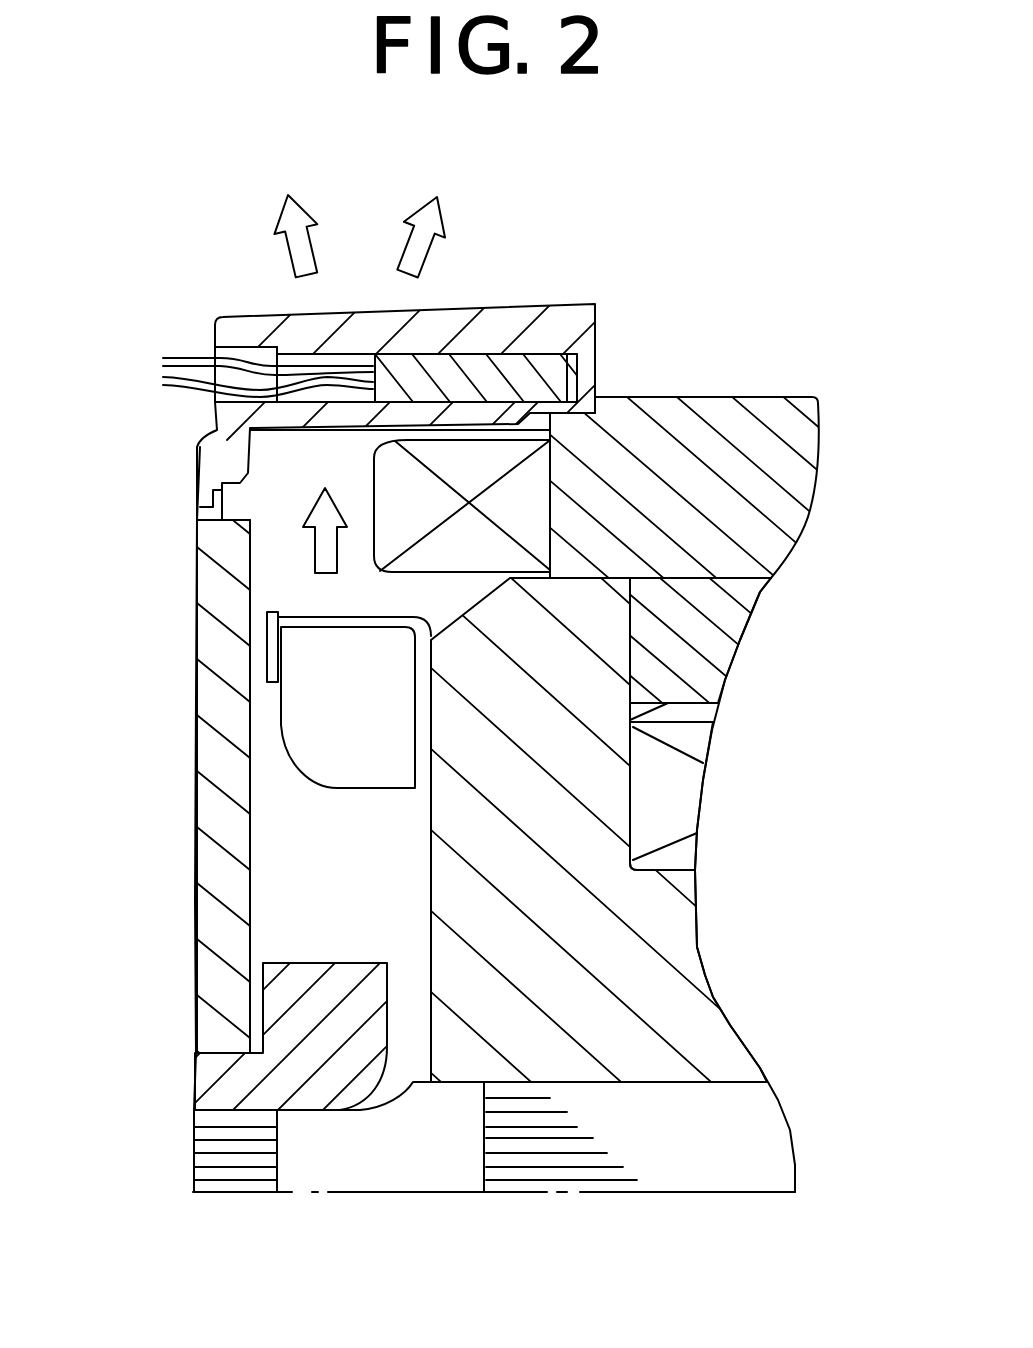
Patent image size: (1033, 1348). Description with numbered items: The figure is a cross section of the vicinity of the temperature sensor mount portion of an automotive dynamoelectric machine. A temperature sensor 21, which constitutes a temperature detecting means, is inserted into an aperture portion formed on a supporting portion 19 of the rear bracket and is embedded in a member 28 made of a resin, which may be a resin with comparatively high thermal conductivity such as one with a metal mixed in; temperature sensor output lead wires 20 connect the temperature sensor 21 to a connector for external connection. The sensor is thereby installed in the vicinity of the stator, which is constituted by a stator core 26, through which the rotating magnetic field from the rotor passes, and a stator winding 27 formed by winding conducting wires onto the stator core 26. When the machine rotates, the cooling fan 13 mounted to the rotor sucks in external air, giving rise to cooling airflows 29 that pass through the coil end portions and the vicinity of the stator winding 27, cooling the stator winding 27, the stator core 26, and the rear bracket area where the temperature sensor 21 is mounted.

The cooling fan 13 is at (317, 670).
The supporting portion 19 is at (214, 352).
The temperature sensor output lead wires 20 is at (185, 358).
The temperature sensor 21 is at (483, 362).
The stator core 26 is at (702, 448).
The stator winding 27 is at (528, 495).
The member 28 is at (330, 350).
The cooling airflows 29 is at (213, 495).